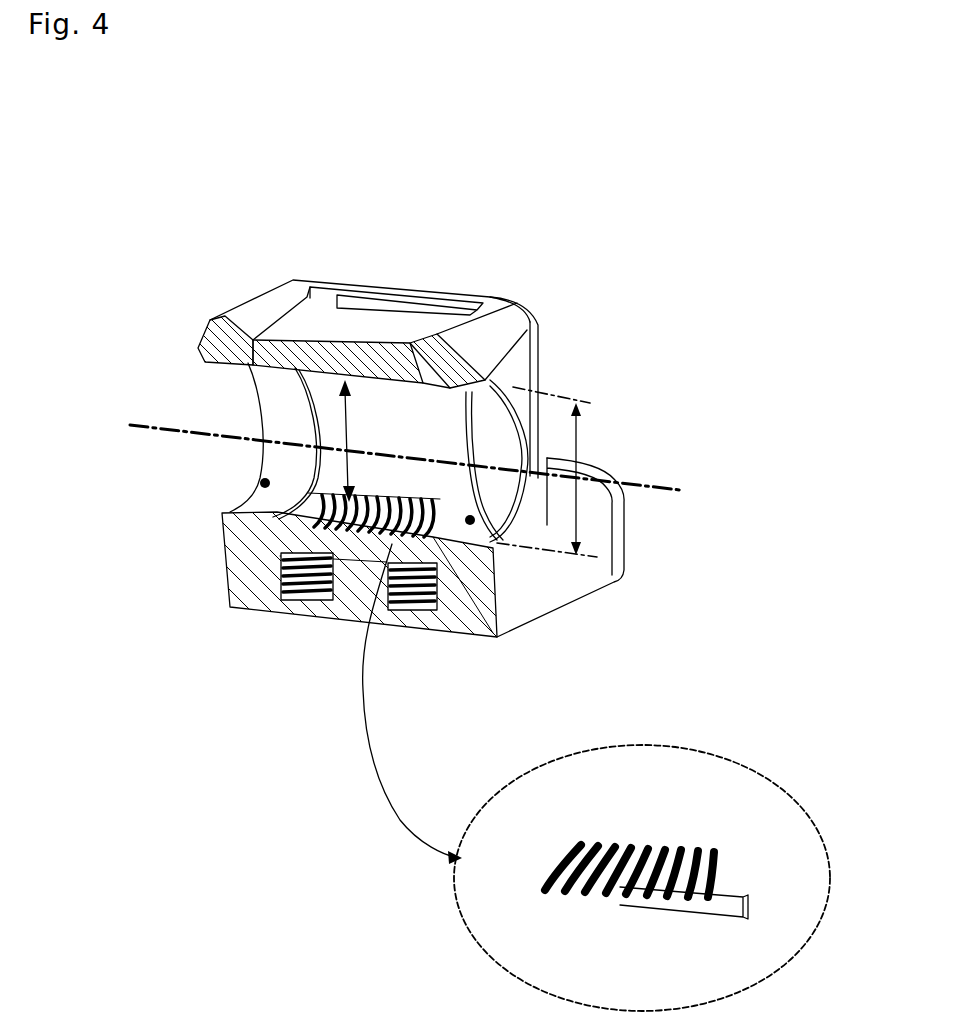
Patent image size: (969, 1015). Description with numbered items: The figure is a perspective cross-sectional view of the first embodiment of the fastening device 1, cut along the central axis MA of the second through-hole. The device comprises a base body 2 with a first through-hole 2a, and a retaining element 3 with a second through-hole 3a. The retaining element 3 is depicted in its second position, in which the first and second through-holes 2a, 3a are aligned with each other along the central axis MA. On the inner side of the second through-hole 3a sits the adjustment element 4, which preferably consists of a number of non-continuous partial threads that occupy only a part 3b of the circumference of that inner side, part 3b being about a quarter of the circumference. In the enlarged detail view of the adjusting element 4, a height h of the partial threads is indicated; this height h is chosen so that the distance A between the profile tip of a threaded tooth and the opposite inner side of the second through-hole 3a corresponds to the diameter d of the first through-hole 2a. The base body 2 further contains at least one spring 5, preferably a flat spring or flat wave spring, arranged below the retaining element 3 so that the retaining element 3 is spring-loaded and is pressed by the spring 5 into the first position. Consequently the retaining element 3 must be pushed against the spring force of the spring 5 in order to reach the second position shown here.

The fastening device 1 is at (562, 242).
The base body 2 is at (618, 507).
The first through-hole 2a is at (265, 483).
The retaining element 3 is at (320, 323).
The second through-hole 3a is at (440, 413).
The part of a circumference of an inner side of the second through-hole 3b is at (430, 503).
The adjustment element 4 is at (310, 520).
The spring 5 is at (297, 588).
The central axis MA is at (237, 437).
The distance A is at (372, 422).
The diameter d is at (580, 457).
The height h is at (763, 905).